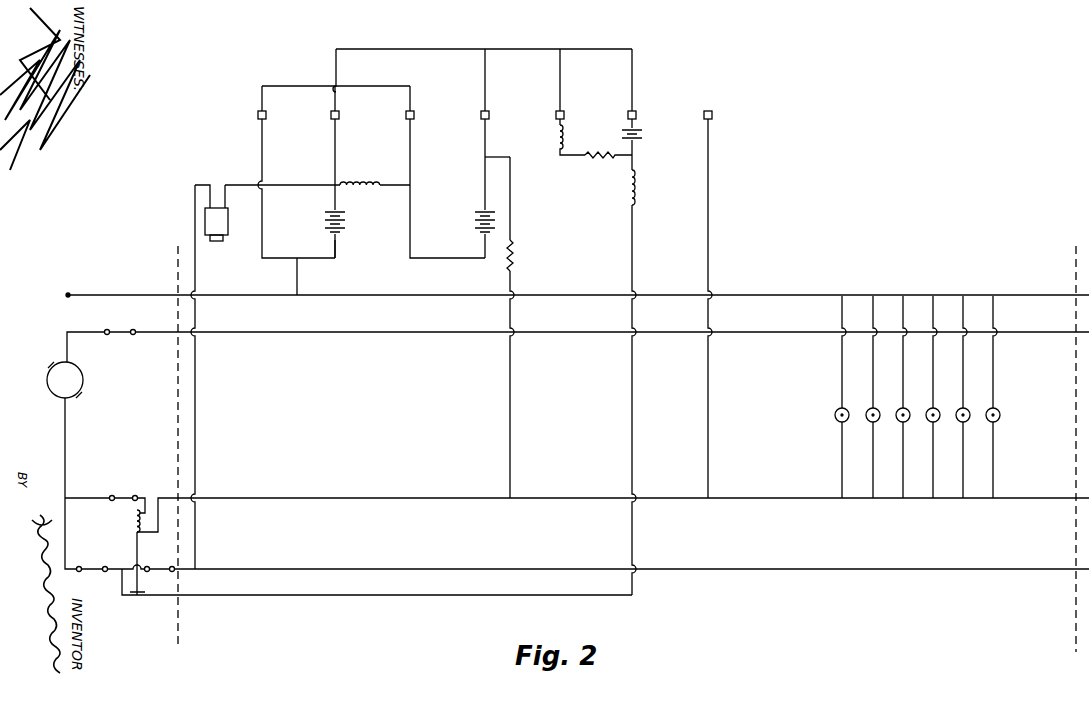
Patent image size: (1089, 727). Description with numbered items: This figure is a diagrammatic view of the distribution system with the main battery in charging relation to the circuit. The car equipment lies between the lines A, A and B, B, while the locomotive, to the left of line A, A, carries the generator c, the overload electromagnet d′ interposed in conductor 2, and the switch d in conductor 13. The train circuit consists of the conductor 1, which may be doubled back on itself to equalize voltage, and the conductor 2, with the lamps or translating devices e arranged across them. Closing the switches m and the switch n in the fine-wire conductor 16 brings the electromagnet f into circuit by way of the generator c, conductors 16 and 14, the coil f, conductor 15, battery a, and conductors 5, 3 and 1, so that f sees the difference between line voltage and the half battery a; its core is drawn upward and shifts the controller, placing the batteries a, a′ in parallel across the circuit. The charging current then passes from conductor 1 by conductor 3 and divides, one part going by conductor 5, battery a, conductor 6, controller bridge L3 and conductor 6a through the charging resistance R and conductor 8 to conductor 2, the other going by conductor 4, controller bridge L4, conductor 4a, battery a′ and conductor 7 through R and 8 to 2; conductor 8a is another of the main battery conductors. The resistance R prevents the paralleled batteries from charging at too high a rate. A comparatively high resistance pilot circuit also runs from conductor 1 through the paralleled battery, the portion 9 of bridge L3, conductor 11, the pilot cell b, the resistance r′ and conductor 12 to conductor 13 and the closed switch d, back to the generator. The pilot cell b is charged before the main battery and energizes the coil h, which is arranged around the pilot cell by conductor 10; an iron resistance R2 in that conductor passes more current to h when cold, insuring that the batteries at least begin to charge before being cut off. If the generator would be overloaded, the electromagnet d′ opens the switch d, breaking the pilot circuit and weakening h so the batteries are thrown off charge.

The conductor 1 is at (427, 300).
The conductor 2 is at (416, 498).
The main battery conductor 3 is at (298, 278).
The main battery conductor 4 is at (262, 136).
The main battery conductor 4a is at (411, 157).
The main battery conductor 5 is at (337, 247).
The main battery conductor 6 is at (335, 149).
The main battery conductor 6a is at (482, 126).
The main battery conductor 7 is at (484, 185).
The main battery conductor 8 is at (512, 378).
The main battery conductor 8a is at (710, 240).
The pilot cell conductor 9 is at (376, 182).
The pilot cell conductor 10 is at (562, 112).
The pilot cell conductor 11 is at (636, 122).
The pilot cell conductor 12 is at (634, 429).
The pilot cell conductor 13 is at (408, 595).
The switch circuit conductor 14 is at (198, 440).
The switch circuit conductor 15 is at (279, 185).
The switch circuit conductor 16 is at (577, 483).
The controller bridge L3 is at (407, 46).
The controller bridge L4 is at (283, 82).
The main battery a is at (324, 221).
The main battery a′ is at (473, 234).
The pilot cell battery b is at (625, 146).
The generator c is at (50, 380).
The overload circuit breaker switch d is at (135, 598).
The electromagnet d′ is at (130, 515).
The lamps or translating devices e is at (834, 415).
The electromagnet or solenoid f is at (224, 228).
The pilot cell coil h is at (562, 140).
The switches m is at (112, 332).
The switch n is at (152, 569).
The resistance r′ is at (636, 186).
The charging resistance R is at (512, 262).
The resistance R2 is at (594, 157).
The line A is at (172, 448).
The line B is at (1068, 449).